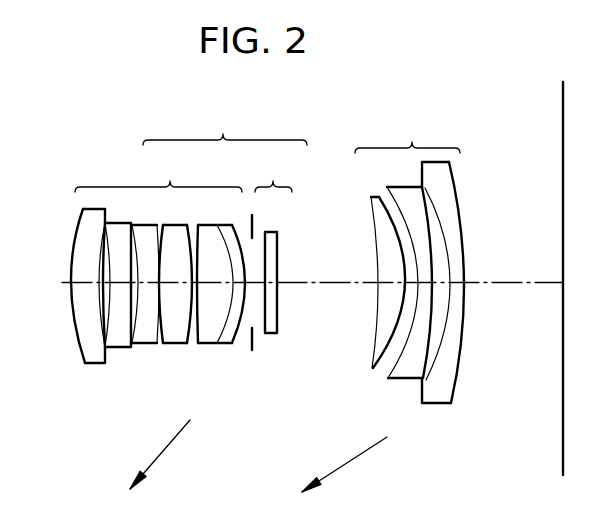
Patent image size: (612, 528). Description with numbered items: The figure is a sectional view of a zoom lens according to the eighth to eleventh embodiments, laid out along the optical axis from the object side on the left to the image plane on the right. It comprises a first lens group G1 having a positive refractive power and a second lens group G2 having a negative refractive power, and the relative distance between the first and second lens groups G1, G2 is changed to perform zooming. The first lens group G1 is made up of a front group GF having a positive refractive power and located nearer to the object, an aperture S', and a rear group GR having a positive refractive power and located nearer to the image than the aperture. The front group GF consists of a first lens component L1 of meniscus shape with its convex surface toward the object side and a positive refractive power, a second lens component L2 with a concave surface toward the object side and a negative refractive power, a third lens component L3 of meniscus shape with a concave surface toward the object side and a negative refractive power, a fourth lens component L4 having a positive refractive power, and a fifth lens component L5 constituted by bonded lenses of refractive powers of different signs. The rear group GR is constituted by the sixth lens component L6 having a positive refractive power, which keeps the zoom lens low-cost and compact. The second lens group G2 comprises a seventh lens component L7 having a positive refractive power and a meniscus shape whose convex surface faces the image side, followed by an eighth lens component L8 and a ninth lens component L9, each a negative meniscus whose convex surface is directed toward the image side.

The first lens group G1 is at (225, 123).
The front group GF is at (158, 168).
The rear group GR is at (273, 168).
The second lens group G2 is at (407, 130).
The first lens component L1 is at (85, 363).
The second lens component L2 is at (118, 347).
The third lens component L3 is at (147, 343).
The fourth lens component L4 is at (180, 343).
The fifth lens component L5 is at (220, 343).
The sixth lens component L6 is at (277, 320).
The aperture stop S' is at (267, 294).
The seventh lens component L7 is at (372, 368).
The eighth lens component L8 is at (407, 378).
The ninth lens component L9 is at (437, 403).